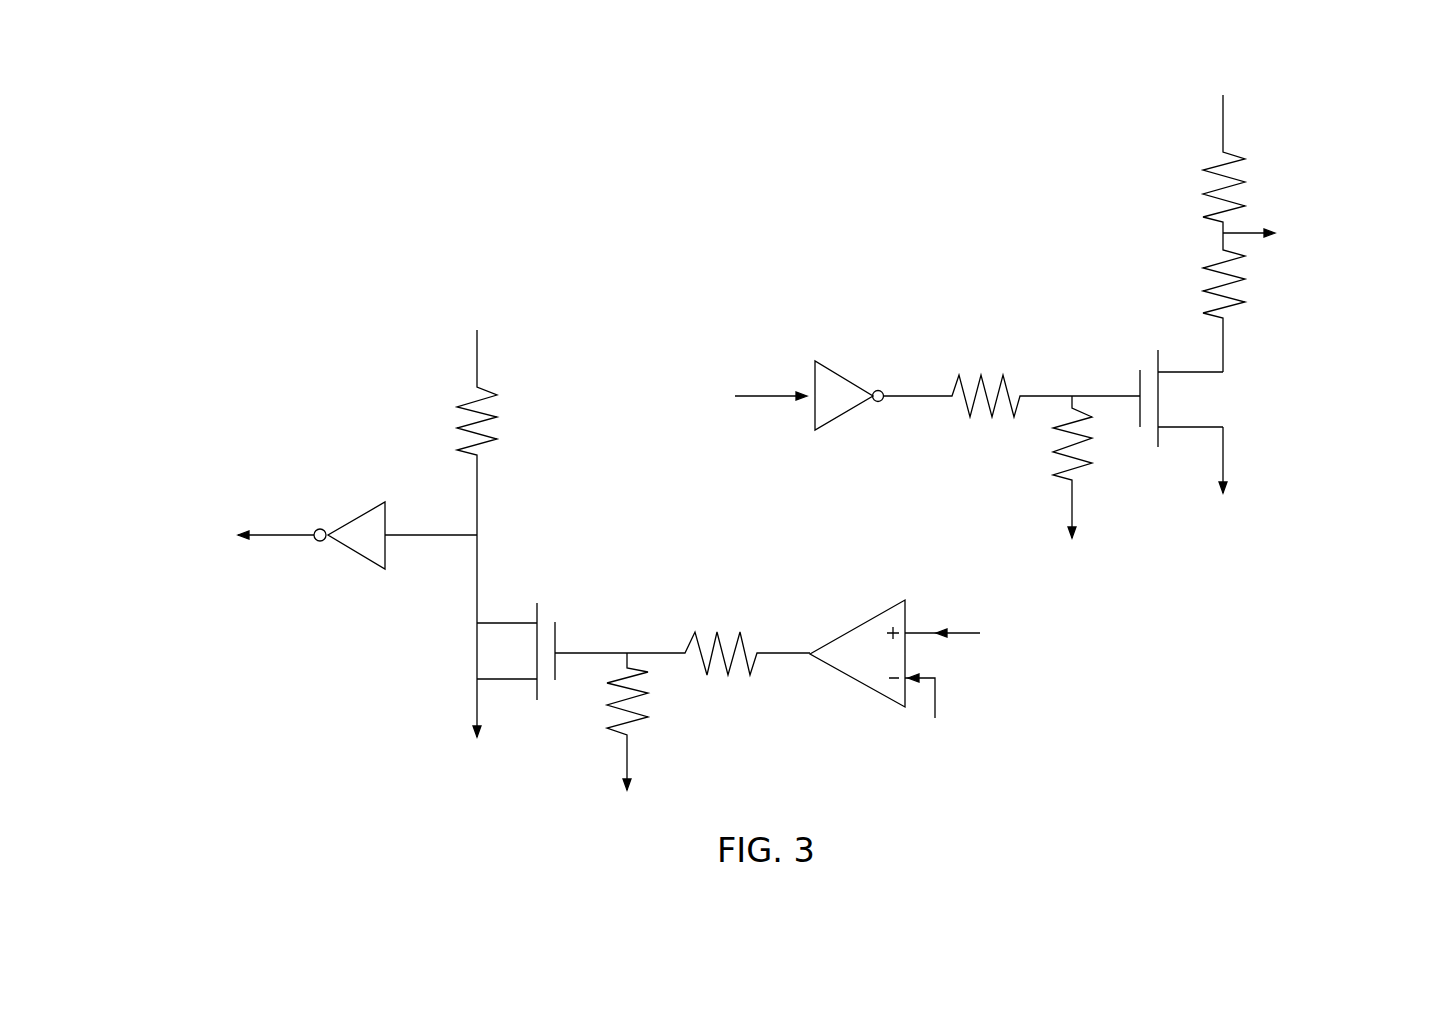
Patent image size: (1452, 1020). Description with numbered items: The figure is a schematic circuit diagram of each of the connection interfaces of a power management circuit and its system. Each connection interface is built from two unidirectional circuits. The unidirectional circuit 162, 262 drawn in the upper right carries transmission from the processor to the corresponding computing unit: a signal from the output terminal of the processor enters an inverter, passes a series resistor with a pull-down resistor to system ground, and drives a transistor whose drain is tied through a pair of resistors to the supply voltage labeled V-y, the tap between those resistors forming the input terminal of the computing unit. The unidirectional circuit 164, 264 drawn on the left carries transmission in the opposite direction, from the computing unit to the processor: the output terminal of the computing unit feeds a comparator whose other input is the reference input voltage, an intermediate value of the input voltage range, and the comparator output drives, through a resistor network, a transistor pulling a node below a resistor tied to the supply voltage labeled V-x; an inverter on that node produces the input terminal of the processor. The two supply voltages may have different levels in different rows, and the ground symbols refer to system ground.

The unidirectional circuit 164 is at (640, 559).
The unidirectional circuit 264 is at (375, 432).
The unidirectional circuit 162 is at (1001, 319).
The unidirectional circuit 262 is at (1060, 256).